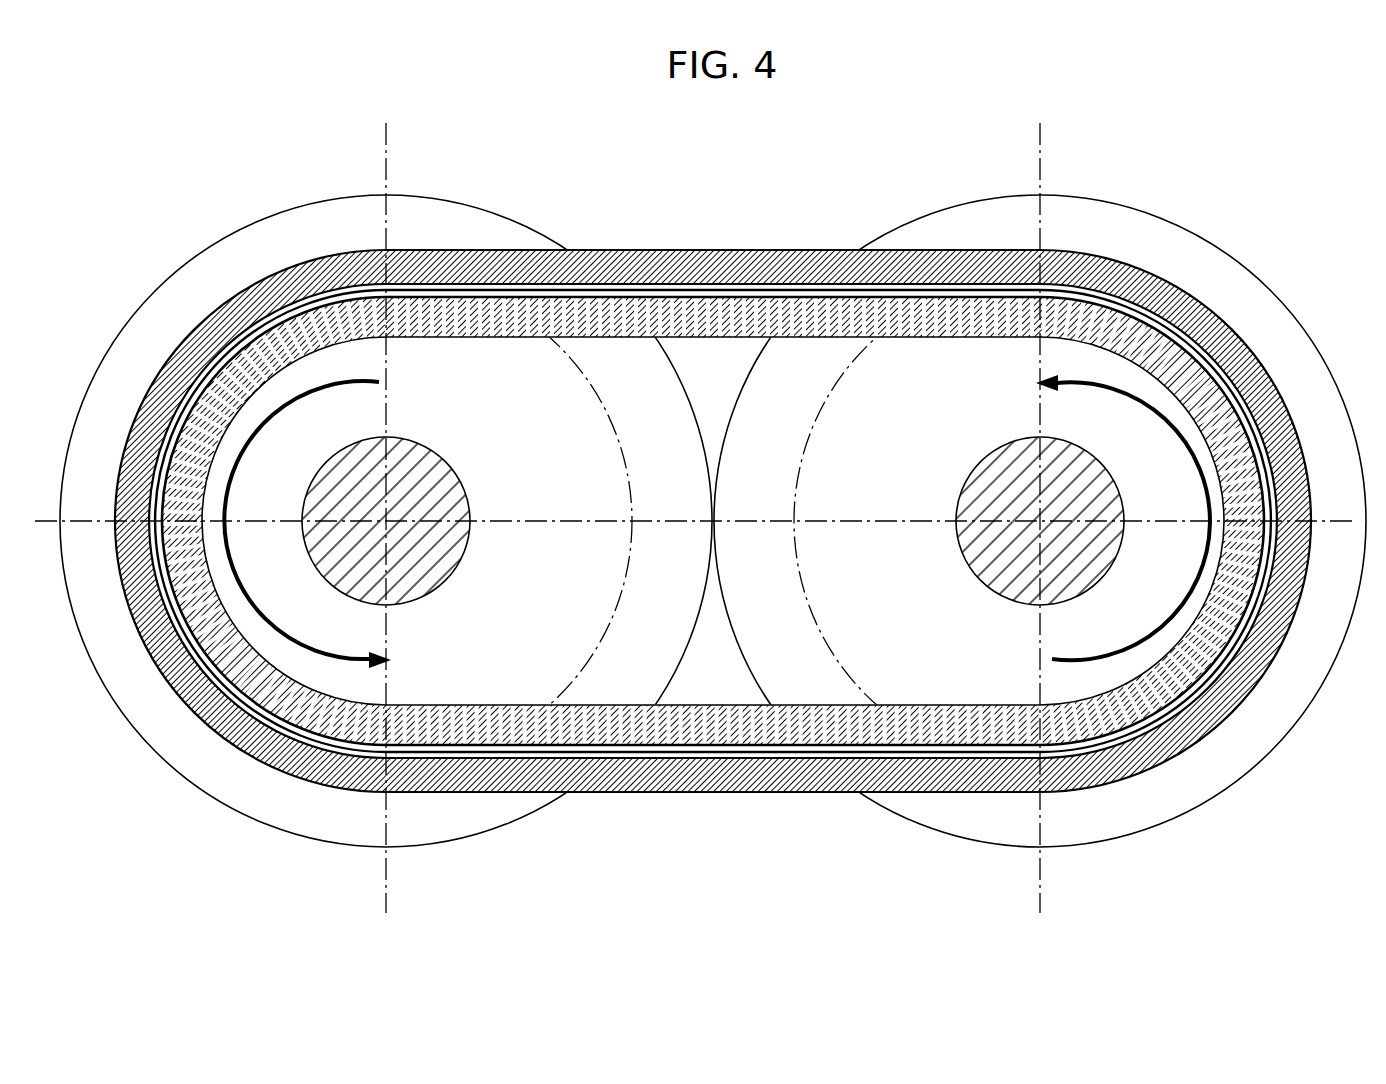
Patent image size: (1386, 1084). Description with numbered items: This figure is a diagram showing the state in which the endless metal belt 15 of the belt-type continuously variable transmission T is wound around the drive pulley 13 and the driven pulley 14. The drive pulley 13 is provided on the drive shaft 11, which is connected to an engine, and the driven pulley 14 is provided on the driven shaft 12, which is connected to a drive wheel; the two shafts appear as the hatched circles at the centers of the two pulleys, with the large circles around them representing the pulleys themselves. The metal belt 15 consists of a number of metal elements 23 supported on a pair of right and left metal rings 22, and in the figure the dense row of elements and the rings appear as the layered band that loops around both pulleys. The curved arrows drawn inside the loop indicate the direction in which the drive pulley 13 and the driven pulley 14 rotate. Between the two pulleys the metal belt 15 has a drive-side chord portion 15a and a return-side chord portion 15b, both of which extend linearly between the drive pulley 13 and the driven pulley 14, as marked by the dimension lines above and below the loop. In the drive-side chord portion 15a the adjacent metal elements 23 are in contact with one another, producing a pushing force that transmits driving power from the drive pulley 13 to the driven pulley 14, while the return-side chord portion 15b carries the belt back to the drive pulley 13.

The drive shaft 11 is at (992, 468).
The driven shaft 12 is at (432, 468).
The drive pulley 13 is at (1113, 222).
The driven pulley 14 is at (247, 250).
The metal belt 15 is at (822, 224).
The drive-side chord portion 15a is at (386, 140).
The return-side chord portion 15b is at (1040, 893).
The metal rings 22 is at (1163, 282).
The metal elements 23 is at (587, 250).
The belt-type continuously variable transmission T is at (1180, 204).